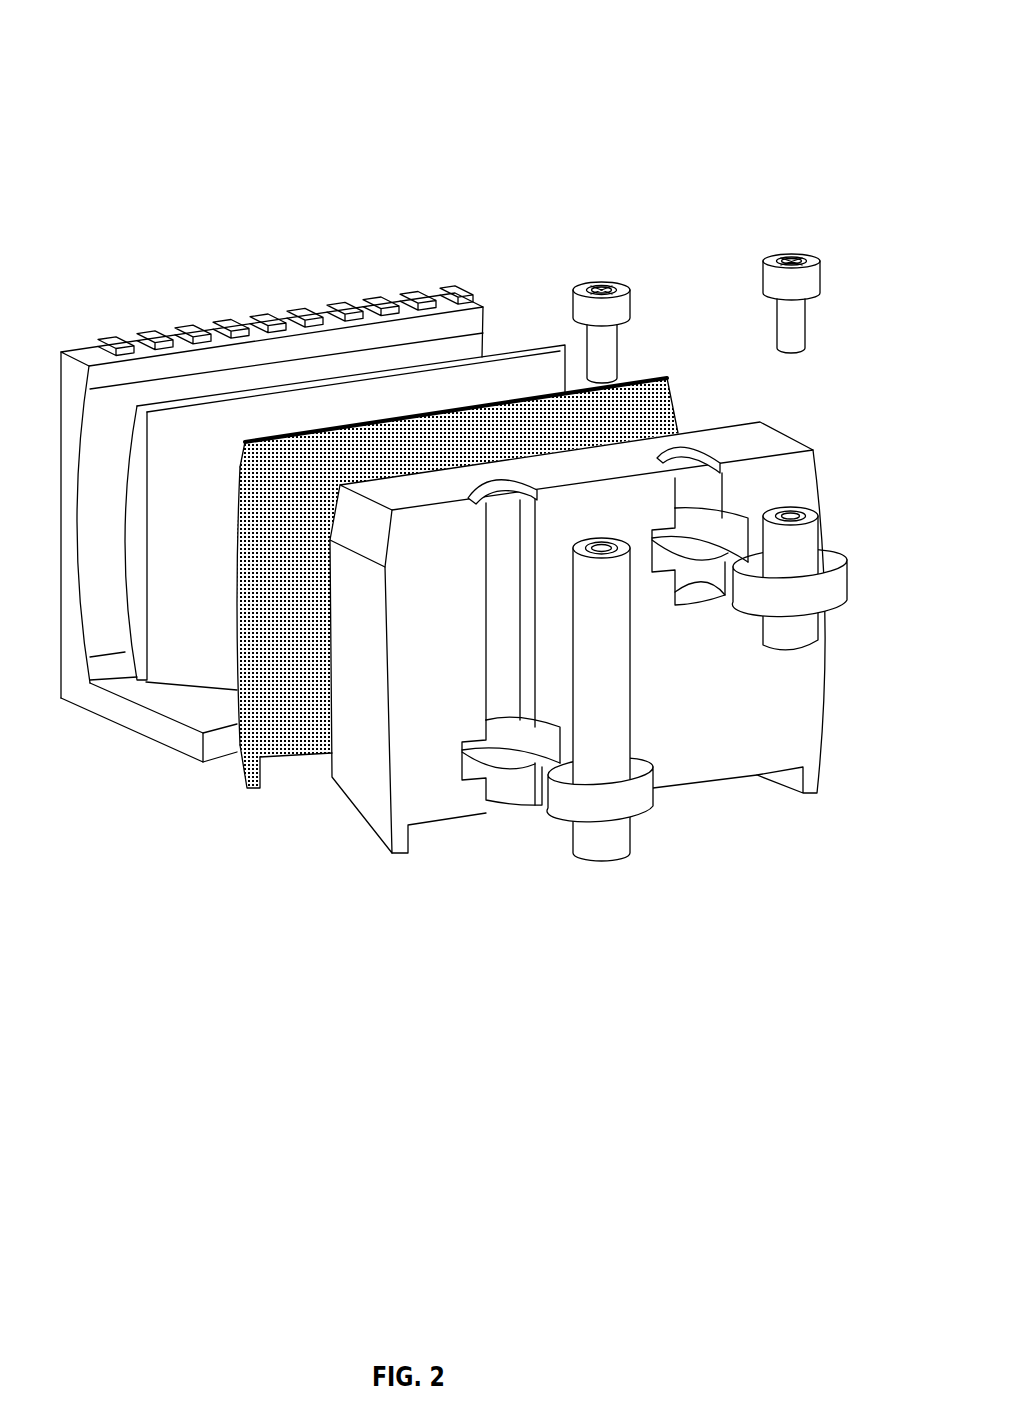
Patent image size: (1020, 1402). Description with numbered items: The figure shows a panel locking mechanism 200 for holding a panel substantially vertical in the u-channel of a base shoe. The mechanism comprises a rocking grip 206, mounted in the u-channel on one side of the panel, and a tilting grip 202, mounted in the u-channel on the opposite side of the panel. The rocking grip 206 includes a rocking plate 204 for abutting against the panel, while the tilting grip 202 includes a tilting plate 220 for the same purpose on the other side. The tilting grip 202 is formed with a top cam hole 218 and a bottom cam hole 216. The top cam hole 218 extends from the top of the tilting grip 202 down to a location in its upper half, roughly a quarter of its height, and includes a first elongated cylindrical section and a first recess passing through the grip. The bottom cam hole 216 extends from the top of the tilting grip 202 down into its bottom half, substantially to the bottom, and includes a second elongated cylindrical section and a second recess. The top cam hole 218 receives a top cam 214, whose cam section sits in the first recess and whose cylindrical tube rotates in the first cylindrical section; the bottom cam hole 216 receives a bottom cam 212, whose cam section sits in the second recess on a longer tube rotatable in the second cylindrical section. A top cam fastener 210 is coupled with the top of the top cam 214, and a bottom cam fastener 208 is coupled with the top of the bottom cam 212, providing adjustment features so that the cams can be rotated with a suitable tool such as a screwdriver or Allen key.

The panel locking mechanism 200 is at (828, 72).
The tilting grip 202 is at (330, 728).
The rocking plate 204 is at (157, 687).
The rocking grip 206 is at (113, 348).
The bottom cam fastener 208 is at (580, 283).
The top cam fastener 210 is at (817, 253).
The bottom cam 212 is at (597, 820).
The top cam 214 is at (793, 638).
The bottom cam hole 216 is at (538, 747).
The top cam hole 218 is at (698, 485).
The tilting plate 220 is at (243, 772).